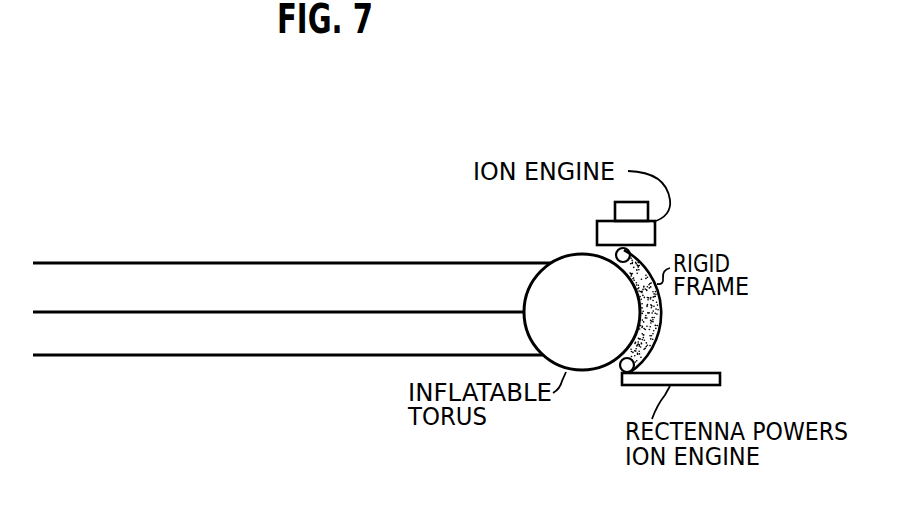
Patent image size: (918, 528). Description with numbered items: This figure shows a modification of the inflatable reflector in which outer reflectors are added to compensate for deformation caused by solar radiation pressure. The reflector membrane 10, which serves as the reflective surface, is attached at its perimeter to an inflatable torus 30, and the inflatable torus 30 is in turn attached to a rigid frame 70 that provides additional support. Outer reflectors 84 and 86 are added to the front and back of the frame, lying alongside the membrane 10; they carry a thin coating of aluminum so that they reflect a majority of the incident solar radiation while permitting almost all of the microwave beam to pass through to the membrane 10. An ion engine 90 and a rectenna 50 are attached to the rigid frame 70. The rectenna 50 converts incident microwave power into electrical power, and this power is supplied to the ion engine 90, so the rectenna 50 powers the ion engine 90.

The reflector membrane 10 is at (267, 311).
The outer reflector 84 is at (291, 262).
The outer reflector 86 is at (294, 357).
The inflatable torus 30 is at (604, 370).
The rigid frame 70 is at (658, 329).
The ion engine 90 is at (597, 224).
The rectenna 50 is at (713, 385).